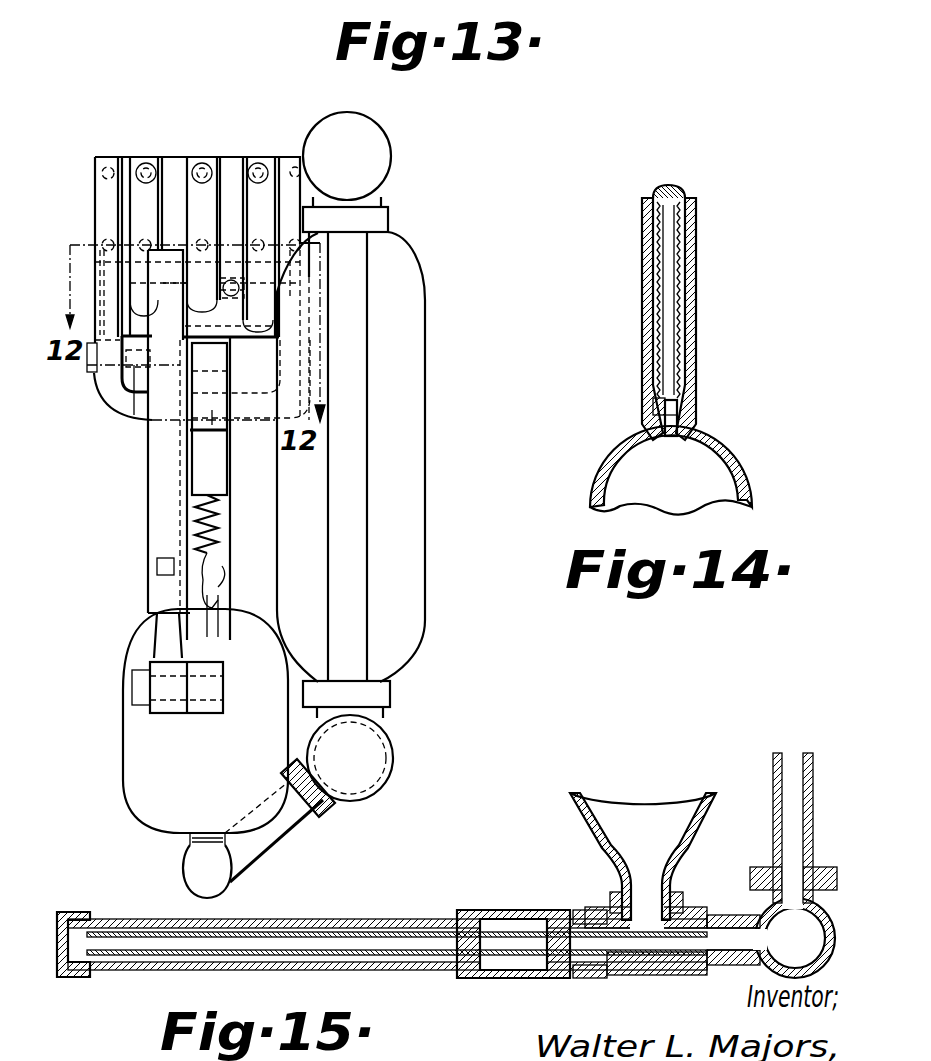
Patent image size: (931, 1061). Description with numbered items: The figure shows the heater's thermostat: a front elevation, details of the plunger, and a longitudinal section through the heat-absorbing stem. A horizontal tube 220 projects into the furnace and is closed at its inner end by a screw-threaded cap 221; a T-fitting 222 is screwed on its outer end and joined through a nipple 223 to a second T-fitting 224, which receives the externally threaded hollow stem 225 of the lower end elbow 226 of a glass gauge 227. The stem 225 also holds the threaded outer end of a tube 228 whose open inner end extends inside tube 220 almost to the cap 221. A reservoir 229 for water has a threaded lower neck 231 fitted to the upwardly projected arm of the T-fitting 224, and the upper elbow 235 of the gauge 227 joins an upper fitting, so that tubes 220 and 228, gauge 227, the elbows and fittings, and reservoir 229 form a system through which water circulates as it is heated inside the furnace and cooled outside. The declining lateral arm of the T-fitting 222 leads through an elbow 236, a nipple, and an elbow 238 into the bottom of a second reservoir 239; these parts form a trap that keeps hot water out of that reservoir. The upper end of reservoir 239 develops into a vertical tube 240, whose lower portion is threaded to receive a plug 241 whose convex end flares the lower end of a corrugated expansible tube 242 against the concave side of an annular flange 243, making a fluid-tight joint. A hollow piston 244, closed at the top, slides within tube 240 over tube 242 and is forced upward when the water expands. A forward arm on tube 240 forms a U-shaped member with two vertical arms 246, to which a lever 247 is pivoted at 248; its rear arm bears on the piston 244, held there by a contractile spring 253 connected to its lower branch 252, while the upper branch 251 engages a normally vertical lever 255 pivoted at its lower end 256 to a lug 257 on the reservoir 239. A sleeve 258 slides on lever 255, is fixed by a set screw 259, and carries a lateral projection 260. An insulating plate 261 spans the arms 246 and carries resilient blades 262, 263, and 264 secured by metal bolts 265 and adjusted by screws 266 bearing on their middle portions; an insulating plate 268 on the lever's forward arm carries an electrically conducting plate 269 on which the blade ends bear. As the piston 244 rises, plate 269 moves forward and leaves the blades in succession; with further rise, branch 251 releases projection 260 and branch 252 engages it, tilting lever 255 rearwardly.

In FIG. 15, the horizontal tube 220 is at (283, 973).
In FIG. 15, the cap 221 is at (60, 980).
In FIG. 13, the T-fitting 222 is at (330, 803).
In FIG. 15, the T-fitting 222 is at (490, 971).
In FIG. 15, the nipple 223 is at (573, 971).
In FIG. 15, the T-fitting 224 is at (623, 973).
In FIG. 15, the hollow stem 225 is at (728, 962).
In FIG. 13, the lower end elbow 226 is at (376, 744).
In FIG. 15, the lower end elbow 226 is at (794, 936).
In FIG. 13, the glass gauge 227 is at (357, 512).
In FIG. 15, the glass gauge 227 is at (773, 790).
In FIG. 15, the tube 228 is at (413, 948).
In FIG. 13, the reservoir 229 is at (351, 469).
In FIG. 15, the reservoir 229 is at (643, 856).
In FIG. 15, the lower neck 231 is at (620, 882).
In FIG. 13, the upper elbow 235 is at (347, 172).
In FIG. 13, the elbow 236 is at (265, 840).
In FIG. 13, the elbow 238 is at (207, 865).
In FIG. 13, the second reservoir 239 is at (205, 721).
In FIG. 14, the second reservoir 239 is at (742, 459).
In FIG. 13, the vertical cylinder or tube 240 is at (227, 550).
In FIG. 14, the vertical cylinder or tube 240 is at (697, 349).
In FIG. 14, the plug 241 is at (686, 416).
In FIG. 14, the corrugated expansible tube 242 is at (673, 320).
In FIG. 14, the annular flange 243 is at (655, 407).
In FIG. 14, the hollow piston 244 is at (672, 190).
In FIG. 13, the vertical arms 246 is at (295, 166).
In FIG. 13, the lever 247 is at (134, 414).
In FIG. 13, the pivot 248 is at (95, 374).
In FIG. 13, the upper branch 251 is at (212, 425).
In FIG. 13, the lower branch 252 is at (191, 482).
In FIG. 13, the contractile spring 253 is at (193, 522).
In FIG. 13, the lever 255 is at (167, 638).
In FIG. 13, the lower end 256 is at (140, 689).
In FIG. 13, the lug 257 is at (214, 671).
In FIG. 13, the sleeve 258 is at (158, 478).
In FIG. 13, the set screw 259 is at (157, 567).
In FIG. 13, the lateral projection 260 is at (230, 407).
In FIG. 13, the insulating plate 261 is at (172, 160).
In FIG. 13, the blade 262 is at (145, 257).
In FIG. 13, the blade 263 is at (202, 255).
In FIG. 13, the blade 264 is at (258, 265).
In FIG. 13, the metal bolts 265 is at (259, 163).
In FIG. 13, the screws 266 is at (254, 243).
In FIG. 13, the insulating plate 268 is at (219, 308).
In FIG. 13, the electrically conducting plate 269 is at (241, 285).